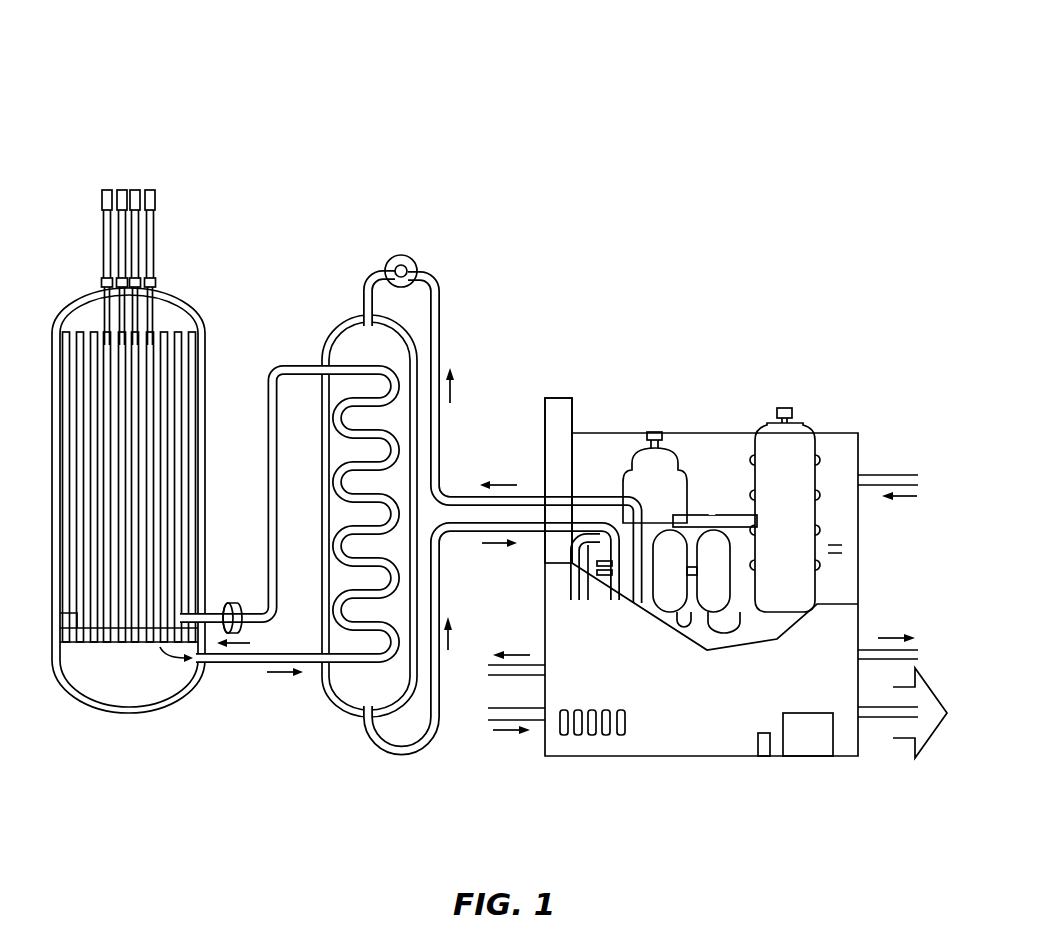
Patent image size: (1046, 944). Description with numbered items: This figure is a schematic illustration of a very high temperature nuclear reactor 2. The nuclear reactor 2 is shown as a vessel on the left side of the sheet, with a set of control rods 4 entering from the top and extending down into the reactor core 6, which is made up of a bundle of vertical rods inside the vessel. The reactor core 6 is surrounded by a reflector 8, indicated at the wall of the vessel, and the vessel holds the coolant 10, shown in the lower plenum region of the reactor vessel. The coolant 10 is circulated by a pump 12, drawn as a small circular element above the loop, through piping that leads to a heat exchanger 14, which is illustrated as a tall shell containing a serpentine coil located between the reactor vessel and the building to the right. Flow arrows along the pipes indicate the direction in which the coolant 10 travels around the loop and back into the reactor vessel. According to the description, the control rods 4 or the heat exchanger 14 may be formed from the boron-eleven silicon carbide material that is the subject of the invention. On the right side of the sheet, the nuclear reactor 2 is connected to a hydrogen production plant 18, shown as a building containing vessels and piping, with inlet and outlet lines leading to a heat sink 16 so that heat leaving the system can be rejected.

The nuclear reactor 2 is at (296, 136).
The control rods 4 is at (108, 190).
The reactor core 6 is at (165, 362).
The reflector 8 is at (205, 372).
The coolant 10 is at (138, 680).
The pump 12 is at (402, 255).
The heat exchanger 14 is at (399, 437).
The heat sink 16 is at (505, 694).
The hydrogen production plant 18 is at (735, 390).